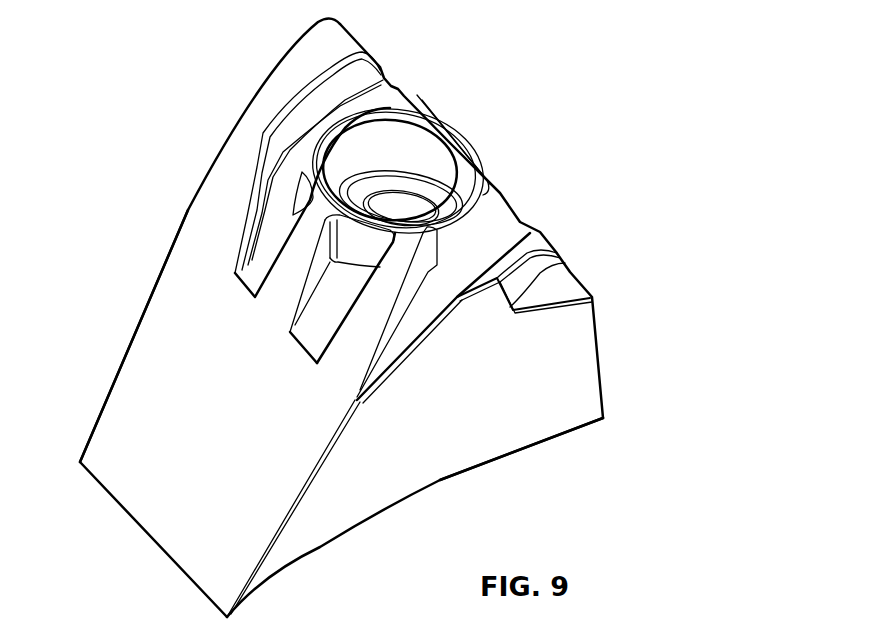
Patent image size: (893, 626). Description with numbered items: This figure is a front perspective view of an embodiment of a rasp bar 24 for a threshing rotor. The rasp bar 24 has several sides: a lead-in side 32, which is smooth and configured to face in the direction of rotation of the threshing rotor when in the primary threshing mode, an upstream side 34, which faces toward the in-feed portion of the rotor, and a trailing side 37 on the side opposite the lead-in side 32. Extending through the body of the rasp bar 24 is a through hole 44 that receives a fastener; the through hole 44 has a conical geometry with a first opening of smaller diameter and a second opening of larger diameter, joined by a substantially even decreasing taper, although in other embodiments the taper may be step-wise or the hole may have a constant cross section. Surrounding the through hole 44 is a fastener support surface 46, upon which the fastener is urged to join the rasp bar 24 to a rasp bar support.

The rasp bar 24 is at (482, 76).
The lead-in side 32 is at (128, 417).
The upstream side 34 is at (480, 440).
The trailing side 37 is at (530, 224).
The through hole 44 is at (410, 207).
The fastener support surface 46 is at (402, 183).